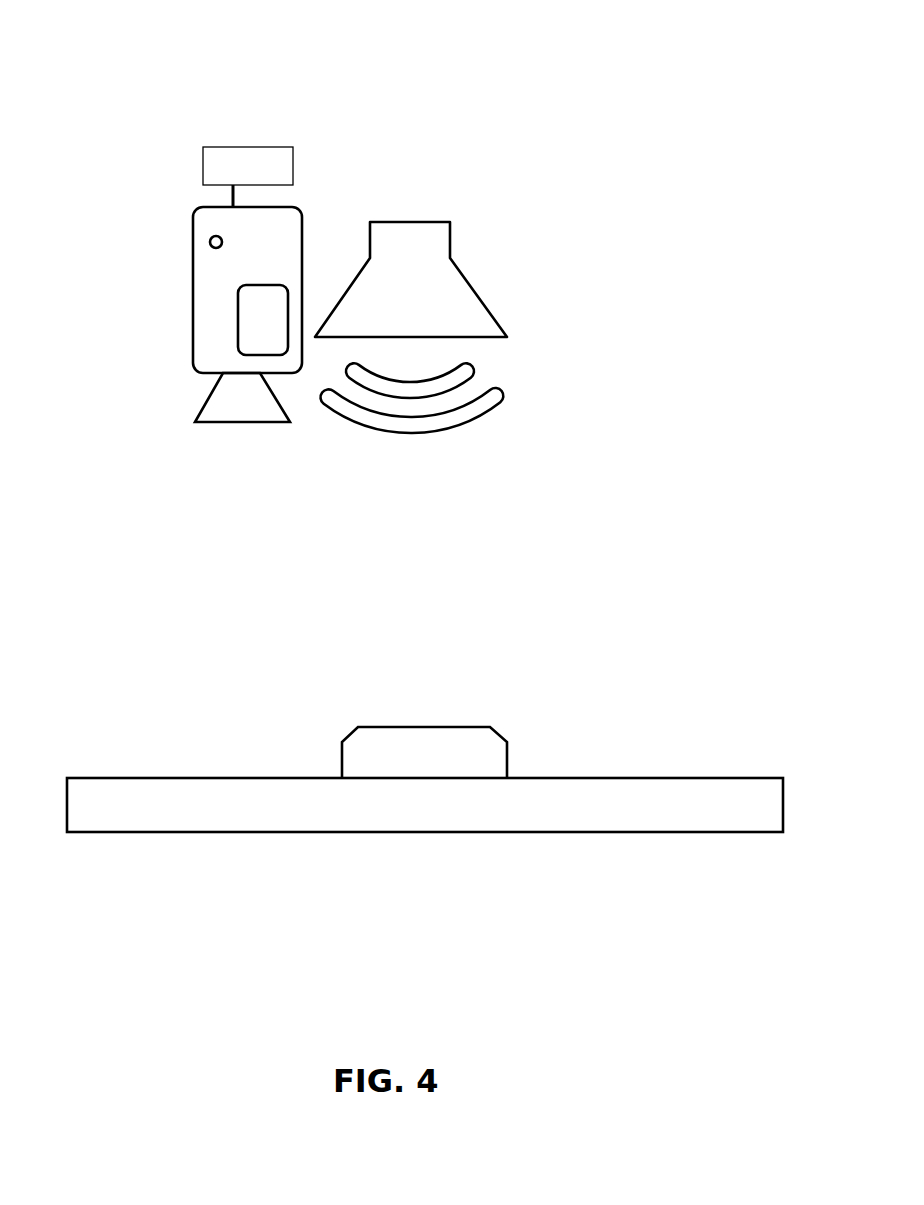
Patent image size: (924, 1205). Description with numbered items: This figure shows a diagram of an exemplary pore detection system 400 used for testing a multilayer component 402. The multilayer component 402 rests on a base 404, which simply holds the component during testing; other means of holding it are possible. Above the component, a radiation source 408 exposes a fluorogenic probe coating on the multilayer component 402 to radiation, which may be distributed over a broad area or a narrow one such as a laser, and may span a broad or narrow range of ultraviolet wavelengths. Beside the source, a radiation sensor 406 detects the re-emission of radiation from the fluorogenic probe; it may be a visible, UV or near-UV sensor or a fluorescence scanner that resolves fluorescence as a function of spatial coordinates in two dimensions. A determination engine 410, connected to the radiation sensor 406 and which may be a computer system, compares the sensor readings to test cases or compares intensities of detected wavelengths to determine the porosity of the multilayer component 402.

The pore detection system 400 is at (673, 92).
The multilayer component 402 is at (463, 727).
The base 404 is at (600, 832).
The radiation sensor 406 is at (193, 215).
The radiation source 408 is at (452, 255).
The determination engine 410 is at (203, 153).